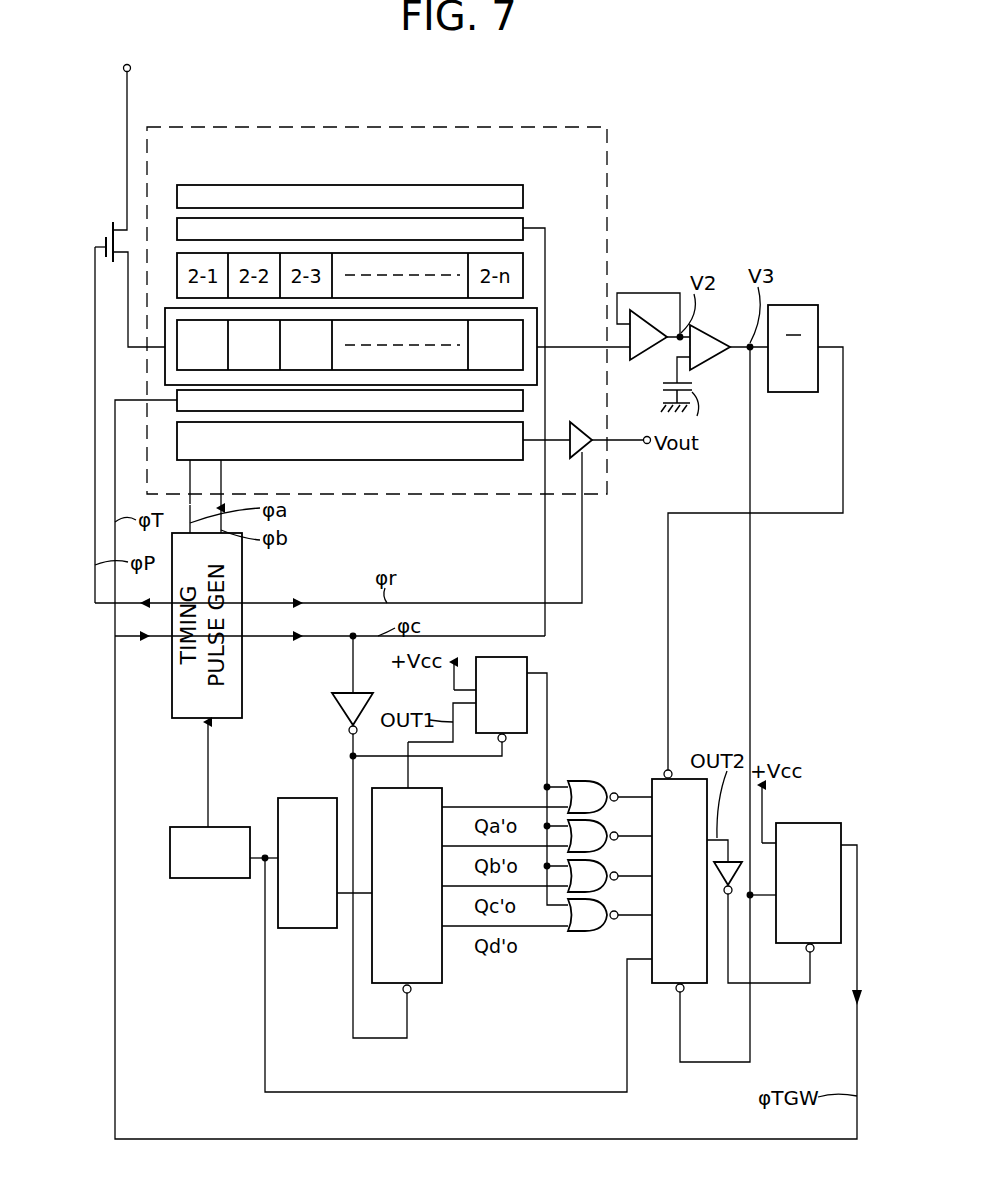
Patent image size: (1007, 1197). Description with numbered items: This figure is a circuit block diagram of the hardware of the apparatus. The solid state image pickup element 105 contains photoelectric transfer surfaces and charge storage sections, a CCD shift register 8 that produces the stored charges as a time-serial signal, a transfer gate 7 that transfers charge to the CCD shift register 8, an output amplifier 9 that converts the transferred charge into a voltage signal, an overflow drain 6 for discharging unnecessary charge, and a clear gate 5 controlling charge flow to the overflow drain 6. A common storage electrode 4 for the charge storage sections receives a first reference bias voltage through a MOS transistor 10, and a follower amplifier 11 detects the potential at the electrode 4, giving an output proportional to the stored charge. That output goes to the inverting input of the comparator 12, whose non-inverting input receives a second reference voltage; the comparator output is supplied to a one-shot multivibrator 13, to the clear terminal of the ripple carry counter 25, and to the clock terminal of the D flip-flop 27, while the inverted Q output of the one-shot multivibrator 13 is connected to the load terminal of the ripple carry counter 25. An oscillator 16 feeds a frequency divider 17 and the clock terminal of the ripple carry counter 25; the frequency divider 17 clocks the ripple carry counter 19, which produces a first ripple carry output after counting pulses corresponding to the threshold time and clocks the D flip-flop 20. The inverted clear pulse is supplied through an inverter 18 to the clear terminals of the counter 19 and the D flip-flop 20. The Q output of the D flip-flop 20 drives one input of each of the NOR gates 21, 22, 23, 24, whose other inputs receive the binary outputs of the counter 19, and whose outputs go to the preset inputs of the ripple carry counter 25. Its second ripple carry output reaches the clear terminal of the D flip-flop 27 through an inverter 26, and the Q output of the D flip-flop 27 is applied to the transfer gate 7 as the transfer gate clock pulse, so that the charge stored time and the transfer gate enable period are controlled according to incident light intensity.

The solid state image pickup element 105 is at (221, 127).
The common storage electrode 4 is at (537, 310).
The clear gate 5 is at (522, 218).
The overflow drain 6 is at (513, 185).
The transfer gate 7 is at (523, 400).
The CCD shift register 8 is at (507, 462).
The output amplifier 9 is at (595, 445).
The MOS transistor 10 is at (106, 240).
The follower amplifier 11 is at (638, 360).
The comparator 12 is at (708, 328).
The one-shot multivibrator 13 is at (788, 305).
The oscillator 16 is at (183, 827).
The frequency divider 17 is at (305, 798).
The inverter 18 is at (332, 712).
The ripple carry counter 19 is at (445, 970).
The D flip-flop 20 is at (530, 663).
The NOR gate 21 is at (580, 781).
The NOR gate 22 is at (607, 822).
The NOR gate 23 is at (612, 892).
The NOR gate 24 is at (582, 932).
The ripple carry counter 25 is at (678, 778).
The inverter 26 is at (722, 894).
The D flip-flop 27 is at (822, 945).